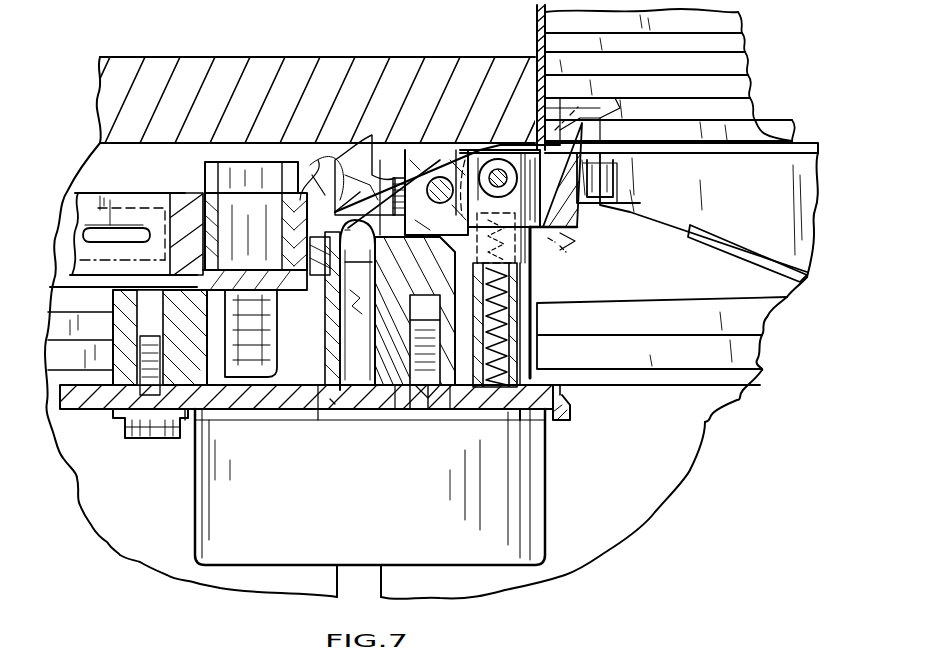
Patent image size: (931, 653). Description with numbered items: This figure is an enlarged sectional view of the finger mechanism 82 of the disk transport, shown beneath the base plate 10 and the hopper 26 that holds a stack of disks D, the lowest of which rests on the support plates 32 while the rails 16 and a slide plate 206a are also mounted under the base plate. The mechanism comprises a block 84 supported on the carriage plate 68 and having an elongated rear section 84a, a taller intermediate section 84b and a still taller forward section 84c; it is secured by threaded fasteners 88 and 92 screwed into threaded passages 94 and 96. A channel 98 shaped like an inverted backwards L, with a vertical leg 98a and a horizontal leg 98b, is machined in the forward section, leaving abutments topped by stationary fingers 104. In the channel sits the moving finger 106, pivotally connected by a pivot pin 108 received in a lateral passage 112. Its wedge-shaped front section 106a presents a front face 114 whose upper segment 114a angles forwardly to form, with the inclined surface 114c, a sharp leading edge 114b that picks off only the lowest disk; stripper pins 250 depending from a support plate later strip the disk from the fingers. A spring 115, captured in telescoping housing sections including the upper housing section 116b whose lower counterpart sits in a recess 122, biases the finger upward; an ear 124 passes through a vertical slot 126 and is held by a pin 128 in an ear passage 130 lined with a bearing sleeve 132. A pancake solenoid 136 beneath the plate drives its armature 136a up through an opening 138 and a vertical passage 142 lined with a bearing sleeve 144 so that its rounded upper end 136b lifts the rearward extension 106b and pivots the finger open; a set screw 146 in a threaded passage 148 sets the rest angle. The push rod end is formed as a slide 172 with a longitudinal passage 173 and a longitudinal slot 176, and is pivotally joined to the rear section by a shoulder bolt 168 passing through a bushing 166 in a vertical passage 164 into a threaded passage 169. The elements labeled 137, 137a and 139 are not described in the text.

The base plate 10 is at (168, 66).
The hopper 26 is at (537, 22).
The disk D is at (778, 120).
The support plate 32 is at (724, 146).
The rail 16 is at (678, 362).
The slide plate 206a is at (735, 242).
The front face 114 is at (612, 200).
The vertical slot 126 is at (615, 182).
The stripper pin 250 is at (620, 166).
The segment 114a is at (618, 130).
The leading edge 114b is at (614, 90).
The inclined surface 114c is at (555, 93).
The stationary finger 104 is at (618, 116).
The front section 106a is at (565, 120).
The moving finger 106 is at (578, 233).
The extension 106b is at (330, 166).
The pawl 137 is at (314, 144).
The pawl tip 137a is at (310, 265).
The pin 128 is at (498, 158).
The bearing sleeve 132 is at (520, 148).
The ear passage 130 is at (470, 148).
The ear 124 is at (480, 148).
The pivot pin 108 is at (445, 170).
The set screw 146 is at (398, 173).
The threaded passage 148 is at (400, 58).
The horizontal leg 98b is at (352, 226).
The lateral passage 112 is at (435, 315).
The upper end 136b is at (338, 304).
The plunger spring 139 is at (345, 323).
The bearing sleeve 144 is at (340, 343).
The channel 98 is at (532, 372).
The vertical leg 98a is at (520, 316).
The spring 115 is at (518, 346).
The upper housing section 116b is at (520, 255).
The finger mechanism 82 is at (556, 302).
The block 84 is at (298, 411).
The rear section 84a is at (192, 412).
The intermediate section 84b is at (398, 410).
The forward section 84c is at (455, 410).
The threaded passage 96 is at (420, 411).
The threaded fastener 92 is at (433, 427).
The pancake solenoid 136 is at (524, 470).
The solenoid armature 136a is at (368, 588).
The carriage plate 68 is at (562, 420).
The recess 122 is at (556, 385).
The longitudinal slot 176 is at (74, 192).
The longitudinal passage 173 is at (80, 326).
The slide 172 is at (114, 192).
The shoulder bolt 168 is at (218, 172).
The bushing 166 is at (182, 218).
The vertical passage 164 is at (206, 208).
The threaded passage 169 is at (240, 411).
The threaded passage 94 is at (120, 428).
The threaded fastener 88 is at (150, 438).
The opening 138 is at (345, 411).
The vertical passage 142 is at (338, 420).